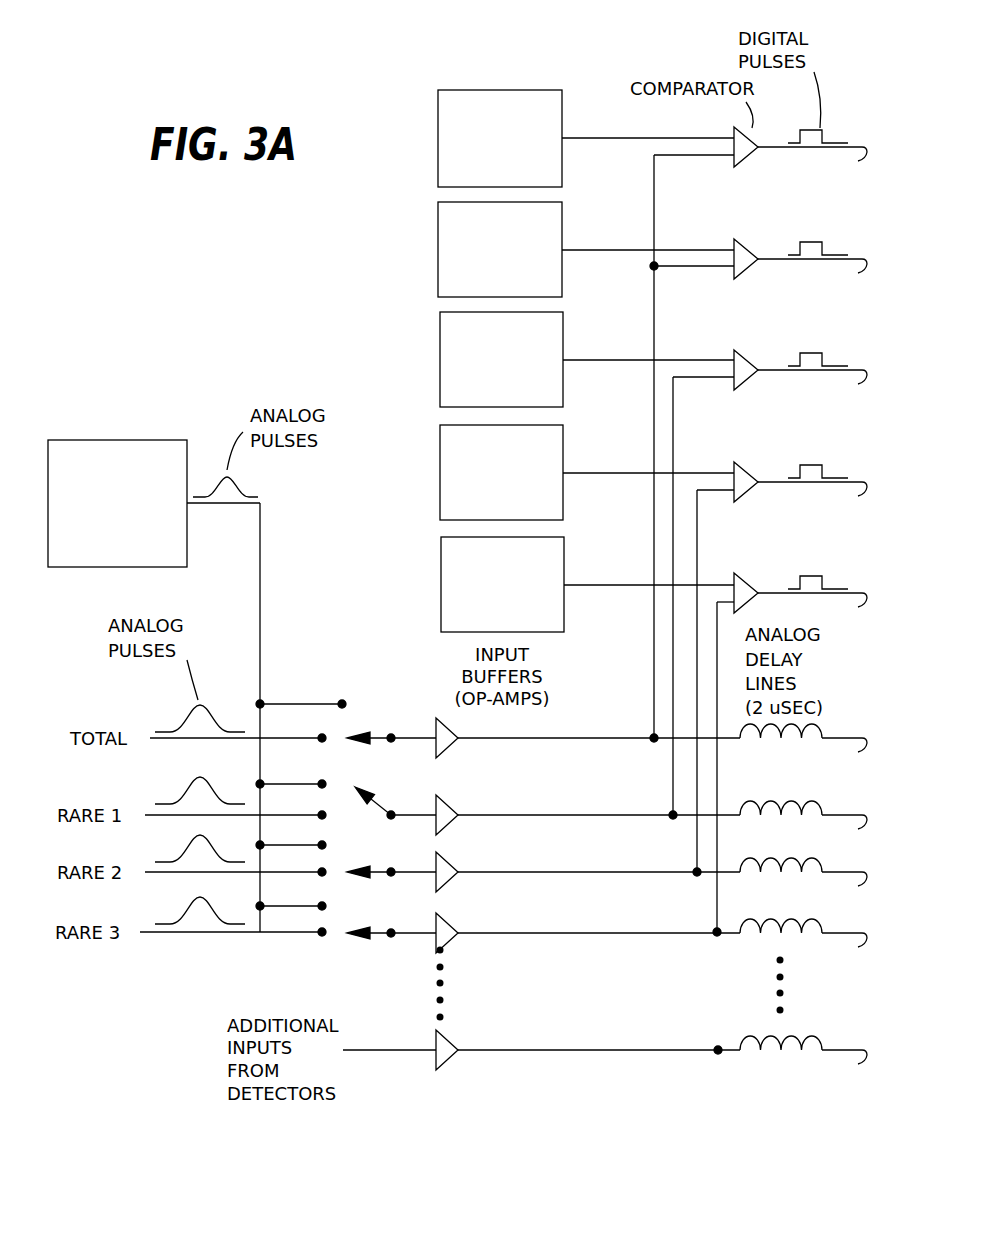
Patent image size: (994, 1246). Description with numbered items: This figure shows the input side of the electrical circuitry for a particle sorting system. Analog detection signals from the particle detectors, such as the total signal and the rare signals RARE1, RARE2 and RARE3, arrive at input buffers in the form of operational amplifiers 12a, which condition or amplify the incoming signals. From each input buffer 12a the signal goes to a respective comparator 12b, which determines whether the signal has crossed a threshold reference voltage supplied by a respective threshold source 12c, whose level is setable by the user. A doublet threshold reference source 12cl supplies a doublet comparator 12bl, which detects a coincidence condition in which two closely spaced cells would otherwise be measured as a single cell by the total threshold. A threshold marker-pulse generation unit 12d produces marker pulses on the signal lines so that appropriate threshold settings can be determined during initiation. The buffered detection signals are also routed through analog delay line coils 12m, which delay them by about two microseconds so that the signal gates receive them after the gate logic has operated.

The doublet threshold reference source 12cl is at (438, 110).
The threshold source 12c is at (438, 222).
The doublet comparator 12bl is at (745, 160).
The comparator 12b is at (745, 272).
The input buffer operational amplifier 12a is at (447, 750).
The analog delay line coil 12m is at (812, 684).
The threshold marker-pulse generation unit 12d is at (100, 440).